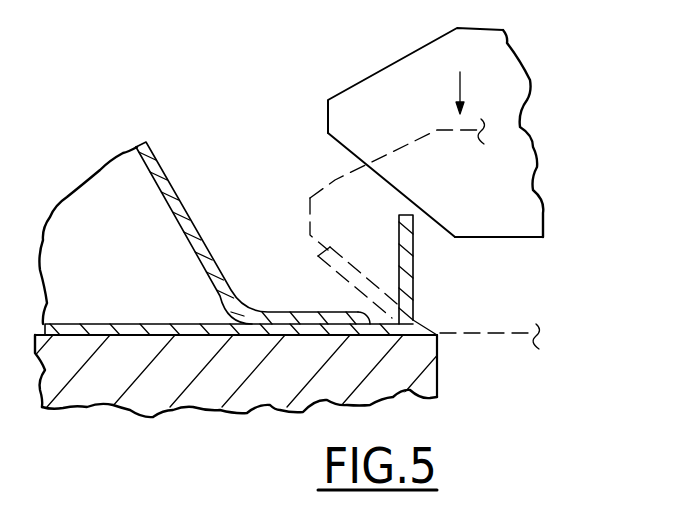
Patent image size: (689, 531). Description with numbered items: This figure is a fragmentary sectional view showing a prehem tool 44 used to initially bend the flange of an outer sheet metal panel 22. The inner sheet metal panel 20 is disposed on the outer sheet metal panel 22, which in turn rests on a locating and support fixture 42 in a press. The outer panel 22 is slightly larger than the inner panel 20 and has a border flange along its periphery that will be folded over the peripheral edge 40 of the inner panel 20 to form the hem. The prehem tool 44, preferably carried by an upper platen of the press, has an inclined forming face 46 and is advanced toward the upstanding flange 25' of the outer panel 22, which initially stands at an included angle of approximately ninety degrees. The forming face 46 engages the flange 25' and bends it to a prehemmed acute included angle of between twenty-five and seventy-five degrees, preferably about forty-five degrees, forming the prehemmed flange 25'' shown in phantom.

The inner sheet metal panel 20 is at (185, 212).
The outer sheet metal panel 22 is at (128, 325).
The upstanding flange 25' is at (452, 269).
The prehemmed flange 25'' is at (397, 218).
The peripheral edge 40 is at (366, 312).
The locating and support fixture 42 is at (425, 362).
The prehem tool 44 is at (395, 75).
The inclined forming face 46 is at (335, 145).